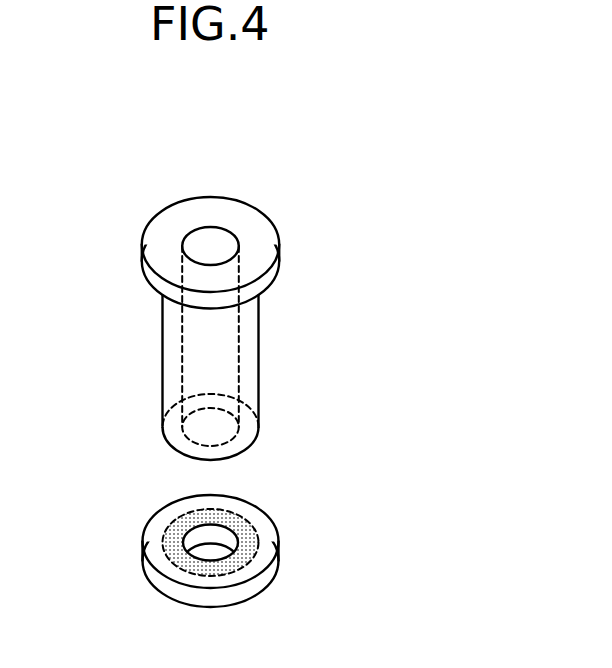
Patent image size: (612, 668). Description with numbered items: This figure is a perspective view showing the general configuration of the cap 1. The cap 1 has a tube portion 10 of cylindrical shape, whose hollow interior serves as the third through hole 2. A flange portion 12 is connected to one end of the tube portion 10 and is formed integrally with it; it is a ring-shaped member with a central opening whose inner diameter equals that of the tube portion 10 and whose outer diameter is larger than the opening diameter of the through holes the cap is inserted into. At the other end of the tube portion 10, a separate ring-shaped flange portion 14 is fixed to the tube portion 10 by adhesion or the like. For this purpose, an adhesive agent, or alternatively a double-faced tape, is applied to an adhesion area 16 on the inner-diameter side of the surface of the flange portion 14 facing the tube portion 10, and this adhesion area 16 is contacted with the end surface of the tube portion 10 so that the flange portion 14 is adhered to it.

The cap 1 is at (184, 163).
The third through hole 2 is at (210, 252).
The tube portion 10 is at (248, 334).
The flange portion 12 is at (232, 214).
The flange portion 14 is at (165, 590).
The adhesion area 16 is at (242, 533).